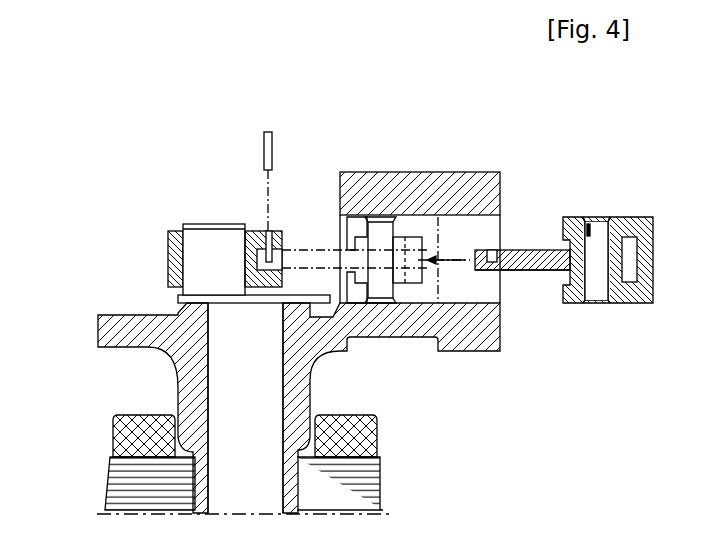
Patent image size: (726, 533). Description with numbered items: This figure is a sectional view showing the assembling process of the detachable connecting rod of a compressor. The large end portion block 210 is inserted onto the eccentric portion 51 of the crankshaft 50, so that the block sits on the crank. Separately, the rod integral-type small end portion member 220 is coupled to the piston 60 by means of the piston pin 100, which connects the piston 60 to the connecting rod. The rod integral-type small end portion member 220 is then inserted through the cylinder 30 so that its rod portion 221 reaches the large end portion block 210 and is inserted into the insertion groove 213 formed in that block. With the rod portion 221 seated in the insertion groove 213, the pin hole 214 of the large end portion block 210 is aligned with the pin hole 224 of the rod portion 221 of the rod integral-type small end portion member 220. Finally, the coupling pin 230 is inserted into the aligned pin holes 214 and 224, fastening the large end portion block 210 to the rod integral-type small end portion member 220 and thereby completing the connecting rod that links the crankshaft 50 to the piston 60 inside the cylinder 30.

The cylinder 30 is at (437, 185).
The crankshaft 50 is at (283, 380).
The eccentric portion 51 is at (200, 273).
The piston 60 is at (616, 206).
The piston pin 100 is at (598, 232).
The large end portion block 210 is at (210, 211).
The insertion groove 213 is at (252, 230).
The pin hole 214 is at (272, 230).
The rod integral-type small end portion member 220 is at (523, 223).
The rod portion 221 is at (522, 311).
The pin hole 224 is at (492, 252).
The coupling pin 230 is at (268, 131).